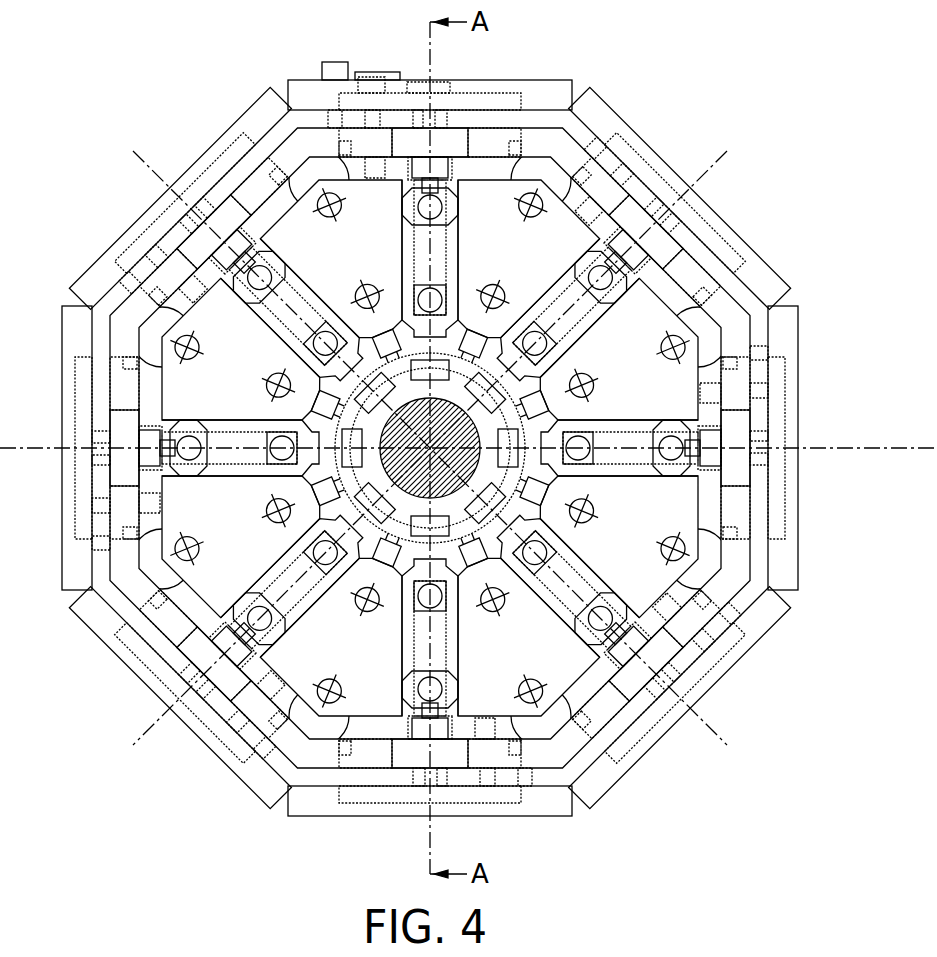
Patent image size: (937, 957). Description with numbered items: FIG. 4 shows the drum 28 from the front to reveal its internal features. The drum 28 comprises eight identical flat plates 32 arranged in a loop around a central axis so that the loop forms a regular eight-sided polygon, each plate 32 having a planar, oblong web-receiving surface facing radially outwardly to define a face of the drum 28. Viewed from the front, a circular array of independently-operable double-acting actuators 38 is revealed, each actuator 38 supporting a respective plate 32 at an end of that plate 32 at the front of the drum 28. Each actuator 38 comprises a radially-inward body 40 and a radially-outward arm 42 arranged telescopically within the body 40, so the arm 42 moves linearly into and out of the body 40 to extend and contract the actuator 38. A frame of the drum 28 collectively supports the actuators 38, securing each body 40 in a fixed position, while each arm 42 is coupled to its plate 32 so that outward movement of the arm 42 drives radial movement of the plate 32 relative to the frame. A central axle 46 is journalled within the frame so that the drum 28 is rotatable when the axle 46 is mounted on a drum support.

The drum 28 is at (770, 152).
The flat plate 32 is at (798, 560).
The double-acting actuator 38 is at (290, 288).
The body 40 is at (248, 478).
The arm 42 is at (152, 442).
The central axle 46 is at (455, 428).